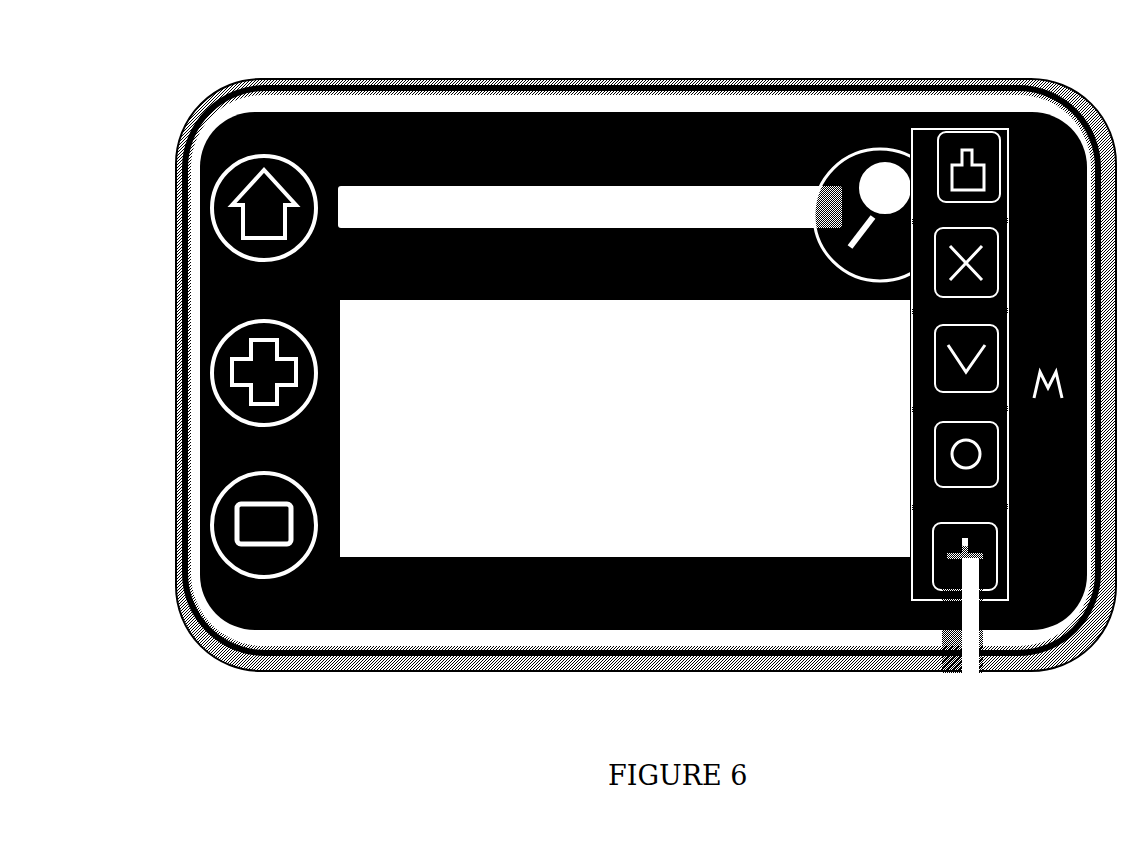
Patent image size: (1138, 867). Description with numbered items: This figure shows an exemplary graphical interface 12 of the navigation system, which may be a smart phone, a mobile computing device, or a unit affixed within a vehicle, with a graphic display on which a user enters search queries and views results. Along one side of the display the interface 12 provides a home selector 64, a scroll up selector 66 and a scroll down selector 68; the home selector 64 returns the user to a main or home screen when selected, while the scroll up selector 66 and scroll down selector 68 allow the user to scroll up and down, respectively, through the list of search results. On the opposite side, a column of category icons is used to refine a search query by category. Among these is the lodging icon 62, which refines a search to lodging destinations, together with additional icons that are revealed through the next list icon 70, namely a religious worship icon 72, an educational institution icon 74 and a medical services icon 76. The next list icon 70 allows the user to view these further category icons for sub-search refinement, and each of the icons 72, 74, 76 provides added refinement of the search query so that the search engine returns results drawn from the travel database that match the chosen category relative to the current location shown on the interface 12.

The user interface 12 is at (852, 706).
The lodging icon 62 is at (968, 145).
The home selector 64 is at (200, 192).
The scroll up selector 66 is at (200, 362).
The scroll down selector 68 is at (207, 517).
The next list icon 70 is at (945, 538).
The religious worship icon 72 is at (905, 318).
The educational institution icon 74 is at (945, 352).
The medical services icon 76 is at (942, 443).